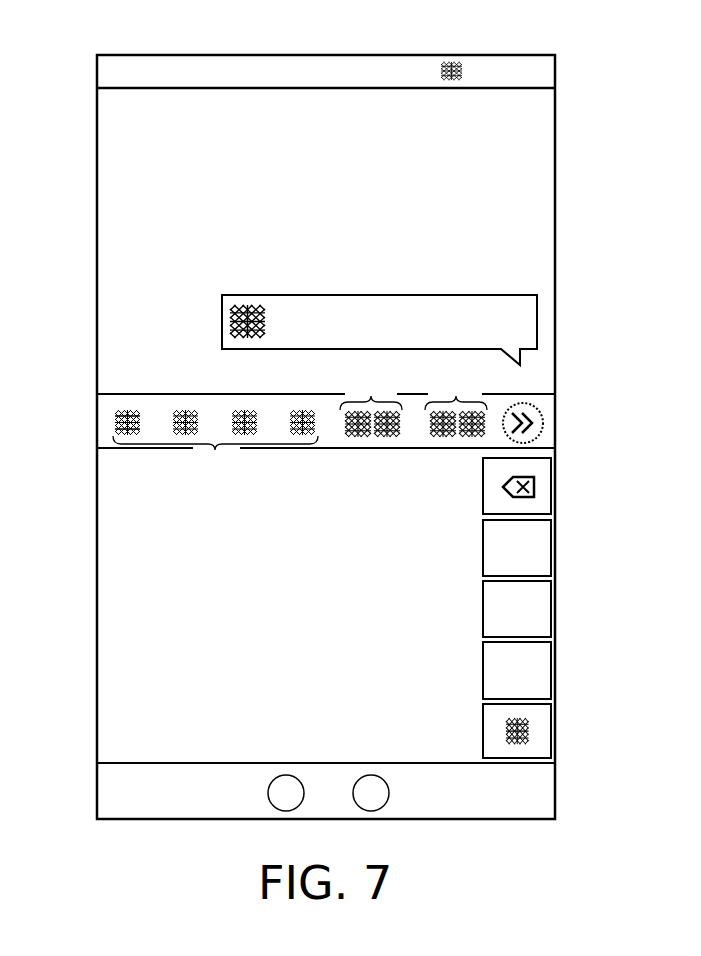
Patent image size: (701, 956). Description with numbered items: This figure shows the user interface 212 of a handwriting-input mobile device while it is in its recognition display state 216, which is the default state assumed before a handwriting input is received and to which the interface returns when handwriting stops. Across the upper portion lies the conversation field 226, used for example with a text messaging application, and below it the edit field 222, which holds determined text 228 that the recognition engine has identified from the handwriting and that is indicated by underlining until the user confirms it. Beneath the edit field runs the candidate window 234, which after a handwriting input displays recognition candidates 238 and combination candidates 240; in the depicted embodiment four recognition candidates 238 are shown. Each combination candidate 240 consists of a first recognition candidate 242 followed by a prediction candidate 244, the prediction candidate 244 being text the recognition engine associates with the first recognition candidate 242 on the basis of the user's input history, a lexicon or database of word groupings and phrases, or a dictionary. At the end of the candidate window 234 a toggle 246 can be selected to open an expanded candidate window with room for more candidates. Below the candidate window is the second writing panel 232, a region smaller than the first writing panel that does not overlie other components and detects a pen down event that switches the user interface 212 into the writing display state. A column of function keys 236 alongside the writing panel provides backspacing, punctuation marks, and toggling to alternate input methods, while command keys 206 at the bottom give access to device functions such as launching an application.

The command keys 206 is at (325, 793).
The user interface 212 is at (355, 437).
The recognition display state 216 is at (50, 311).
The edit field 222 is at (517, 323).
The conversation field 226 is at (355, 97).
The determined text 228 is at (250, 305).
The second writing panel 232 is at (320, 625).
The candidate window 234 is at (296, 421).
The function keys 236 is at (548, 608).
The recognition candidates 238 is at (215, 439).
The combination candidates 240 is at (413, 393).
The first recognition candidate 242 is at (131, 404).
The prediction candidate 244 is at (370, 438).
The toggle 246 is at (558, 423).